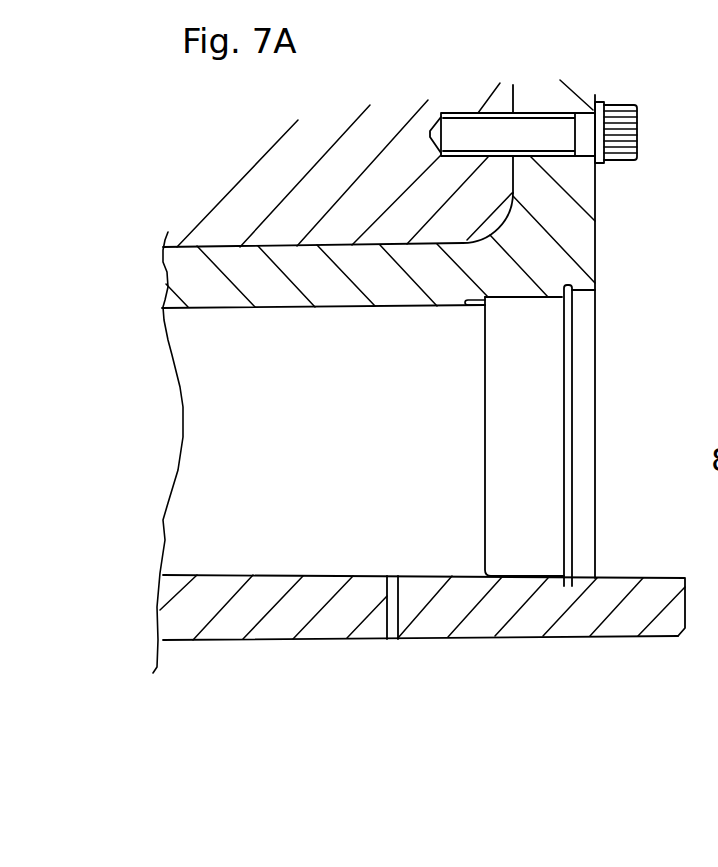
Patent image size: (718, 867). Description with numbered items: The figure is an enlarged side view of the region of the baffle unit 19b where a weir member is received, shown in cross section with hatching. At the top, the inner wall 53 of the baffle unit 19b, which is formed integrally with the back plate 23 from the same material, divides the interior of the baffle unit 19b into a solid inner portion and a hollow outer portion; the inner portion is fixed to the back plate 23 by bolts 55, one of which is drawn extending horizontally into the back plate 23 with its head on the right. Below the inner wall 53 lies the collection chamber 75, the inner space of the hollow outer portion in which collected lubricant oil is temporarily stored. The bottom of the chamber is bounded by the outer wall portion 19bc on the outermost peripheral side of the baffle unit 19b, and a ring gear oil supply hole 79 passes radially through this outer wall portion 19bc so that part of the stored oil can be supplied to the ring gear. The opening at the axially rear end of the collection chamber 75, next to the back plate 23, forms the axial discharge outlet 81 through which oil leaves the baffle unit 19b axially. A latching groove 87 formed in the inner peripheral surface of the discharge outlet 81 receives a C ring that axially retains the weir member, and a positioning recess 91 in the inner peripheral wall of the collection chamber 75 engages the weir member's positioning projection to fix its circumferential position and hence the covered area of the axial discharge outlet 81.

The bolt 55 is at (632, 128).
The back plate 23 is at (597, 236).
The latching groove 87 is at (573, 300).
The inner wall 53 is at (198, 309).
The positioning recess 91 is at (478, 308).
The collection chamber 75 is at (336, 490).
The axial discharge outlet 81 is at (543, 577).
The ring gear oil supply hole 79 is at (392, 641).
The baffle unit 19b is at (240, 648).
The outer wall portion 19bc is at (482, 630).